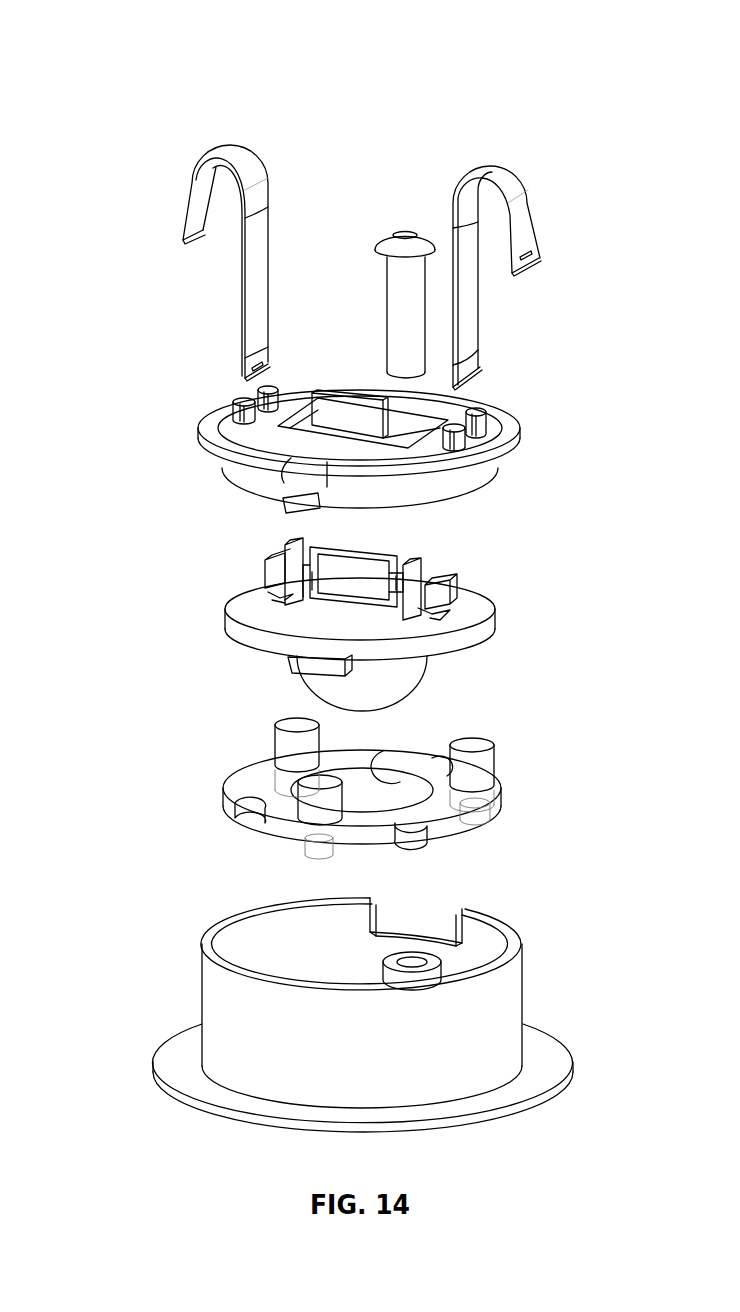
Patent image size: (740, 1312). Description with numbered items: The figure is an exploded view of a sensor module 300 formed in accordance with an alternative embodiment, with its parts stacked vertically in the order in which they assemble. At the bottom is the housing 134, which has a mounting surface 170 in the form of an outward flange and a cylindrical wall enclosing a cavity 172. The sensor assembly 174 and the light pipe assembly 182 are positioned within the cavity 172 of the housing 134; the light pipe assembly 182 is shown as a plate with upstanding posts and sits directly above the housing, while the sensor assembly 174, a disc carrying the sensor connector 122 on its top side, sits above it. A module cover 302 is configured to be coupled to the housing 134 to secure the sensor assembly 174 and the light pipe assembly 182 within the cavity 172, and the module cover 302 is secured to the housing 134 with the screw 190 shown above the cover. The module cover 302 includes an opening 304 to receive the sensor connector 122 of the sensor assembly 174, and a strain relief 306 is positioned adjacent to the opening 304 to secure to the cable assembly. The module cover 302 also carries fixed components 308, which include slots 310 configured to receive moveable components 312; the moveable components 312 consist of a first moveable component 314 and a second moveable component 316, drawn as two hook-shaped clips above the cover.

The sensor module 300 is at (561, 54).
The moveable components 312 is at (198, 145).
The first moveable component 314 is at (233, 152).
The second moveable component 316 is at (494, 172).
The screw 190 is at (402, 243).
The module cover 302 is at (533, 390).
The opening 304 is at (298, 411).
The strain relief 306 is at (365, 412).
The fixed components 308 is at (236, 402).
The slots 310 is at (264, 390).
The sensor assembly 174 is at (533, 550).
The sensor connector 122 is at (443, 566).
The light pipe assembly 182 is at (533, 715).
The housing 134 is at (165, 903).
The mounting surface 170 is at (550, 1055).
The cavity 172 is at (375, 956).